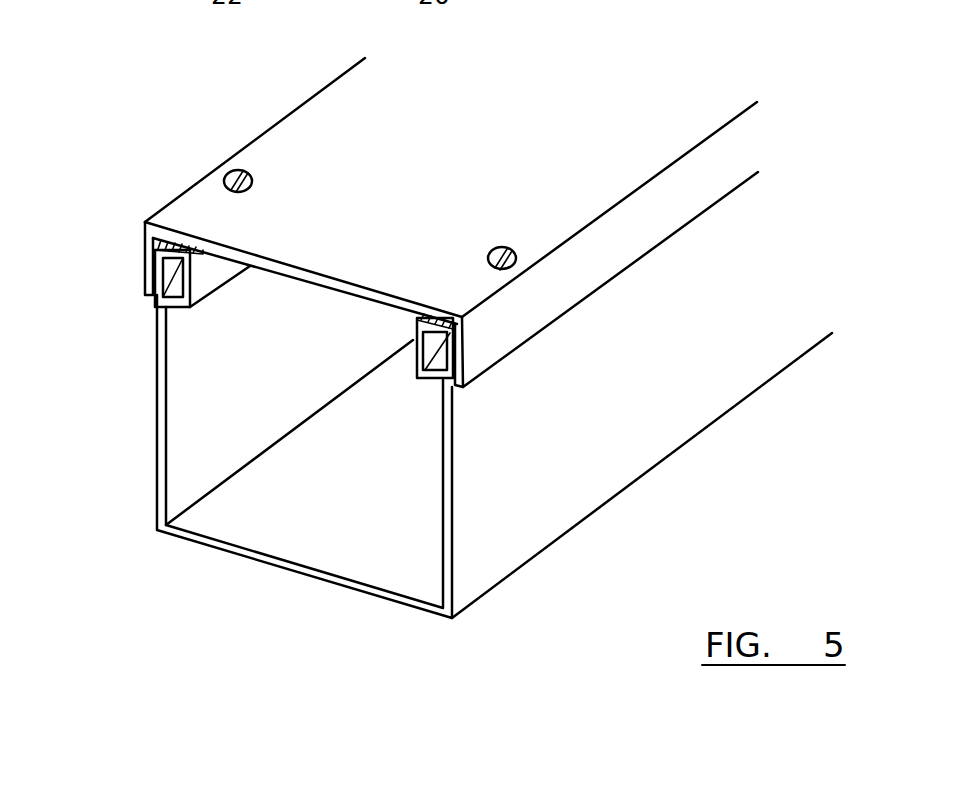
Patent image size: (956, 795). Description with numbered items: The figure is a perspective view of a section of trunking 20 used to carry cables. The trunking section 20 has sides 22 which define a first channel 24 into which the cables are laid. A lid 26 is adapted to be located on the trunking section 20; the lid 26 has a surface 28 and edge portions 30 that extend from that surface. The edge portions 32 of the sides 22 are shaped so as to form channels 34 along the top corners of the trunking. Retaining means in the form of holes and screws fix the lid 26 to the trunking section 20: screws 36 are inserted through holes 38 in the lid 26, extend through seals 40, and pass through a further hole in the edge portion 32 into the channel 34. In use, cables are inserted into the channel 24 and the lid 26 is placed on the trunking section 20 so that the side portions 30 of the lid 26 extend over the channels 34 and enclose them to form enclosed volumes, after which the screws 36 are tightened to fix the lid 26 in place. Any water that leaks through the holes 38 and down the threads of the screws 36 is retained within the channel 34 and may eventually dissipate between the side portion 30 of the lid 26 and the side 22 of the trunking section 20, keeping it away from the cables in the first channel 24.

The trunking section 20 is at (436, 496).
The sides 22 is at (195, 445).
The first channel 24 is at (310, 519).
The lid 26 is at (397, 257).
The surface 28 is at (345, 160).
The edge portions 30 is at (673, 197).
The edge portions 32 is at (212, 274).
The channels 34 is at (166, 290).
The screws 36 is at (222, 178).
The holes 38 is at (224, 181).
The seals 40 is at (150, 243).